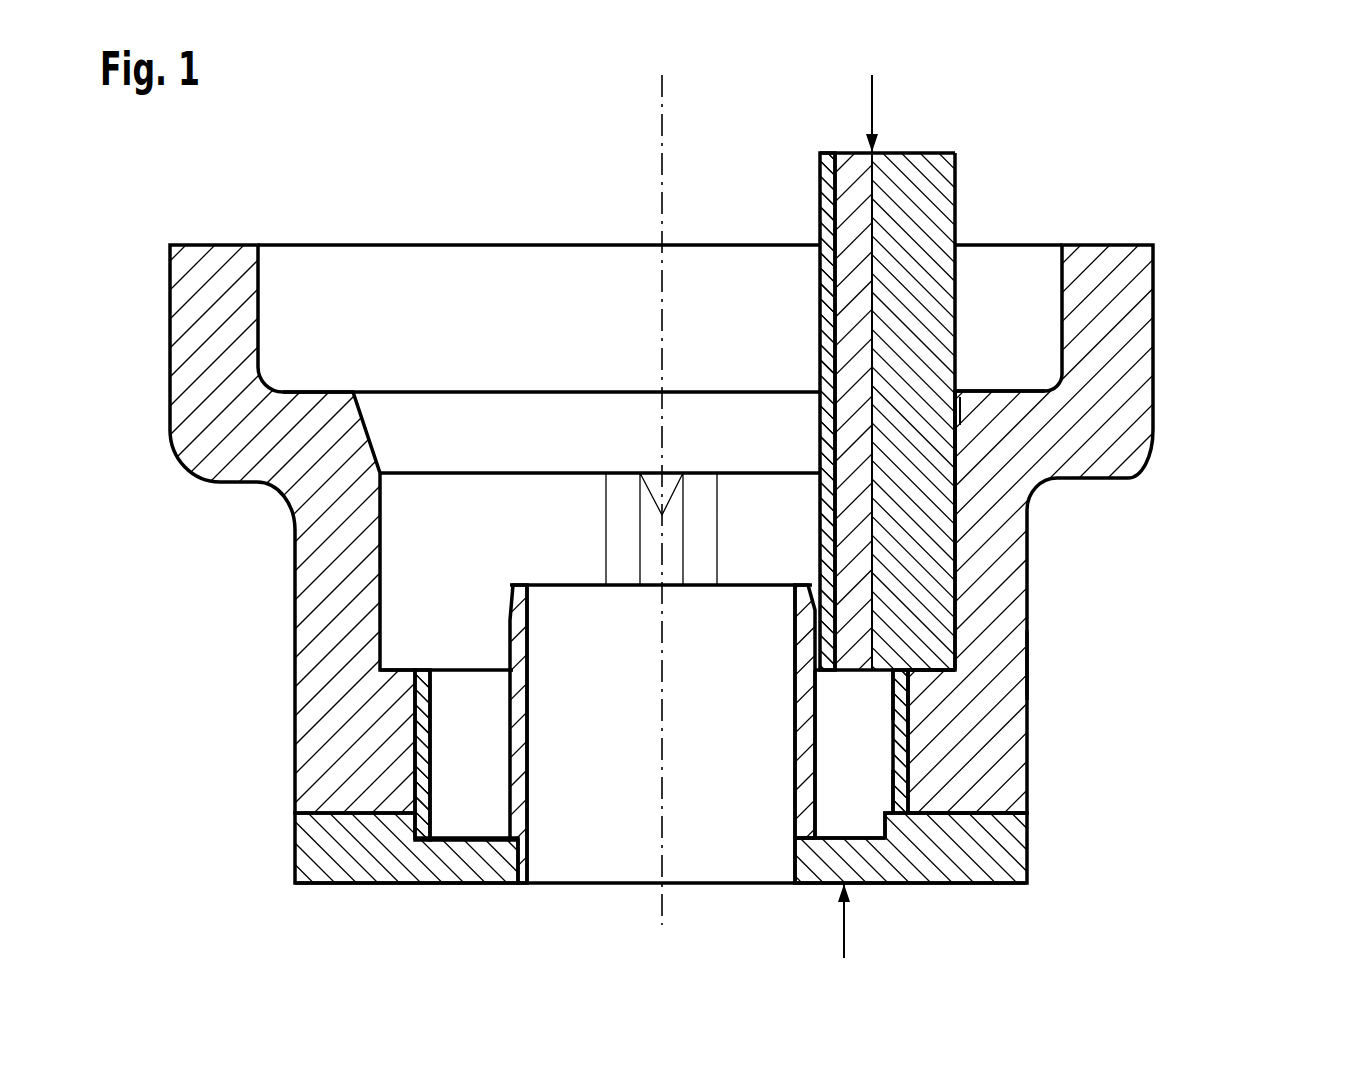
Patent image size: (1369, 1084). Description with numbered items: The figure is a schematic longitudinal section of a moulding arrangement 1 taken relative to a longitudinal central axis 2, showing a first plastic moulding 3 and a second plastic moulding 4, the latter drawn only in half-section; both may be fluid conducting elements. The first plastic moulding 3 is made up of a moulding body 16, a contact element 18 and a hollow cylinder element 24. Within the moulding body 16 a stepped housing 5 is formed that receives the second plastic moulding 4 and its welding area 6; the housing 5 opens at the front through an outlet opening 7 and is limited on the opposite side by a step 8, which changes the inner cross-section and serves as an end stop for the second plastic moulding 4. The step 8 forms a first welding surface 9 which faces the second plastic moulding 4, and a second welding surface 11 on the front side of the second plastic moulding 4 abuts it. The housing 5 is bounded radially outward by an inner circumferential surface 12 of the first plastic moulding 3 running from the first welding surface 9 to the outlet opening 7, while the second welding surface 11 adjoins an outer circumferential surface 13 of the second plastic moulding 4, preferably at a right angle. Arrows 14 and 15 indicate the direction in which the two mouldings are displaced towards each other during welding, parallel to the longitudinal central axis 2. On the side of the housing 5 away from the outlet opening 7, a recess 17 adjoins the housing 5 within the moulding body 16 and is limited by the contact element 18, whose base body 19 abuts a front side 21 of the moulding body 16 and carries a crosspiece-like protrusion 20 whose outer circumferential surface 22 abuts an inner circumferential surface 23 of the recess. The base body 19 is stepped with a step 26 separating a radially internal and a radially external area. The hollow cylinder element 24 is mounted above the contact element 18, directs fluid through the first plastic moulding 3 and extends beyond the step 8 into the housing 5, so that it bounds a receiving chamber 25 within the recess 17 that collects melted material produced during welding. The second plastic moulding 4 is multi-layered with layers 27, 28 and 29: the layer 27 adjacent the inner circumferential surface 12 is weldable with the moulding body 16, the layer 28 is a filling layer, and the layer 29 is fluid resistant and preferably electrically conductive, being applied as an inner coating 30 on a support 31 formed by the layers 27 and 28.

The moulding arrangement 1 is at (1211, 165).
The longitudinal central axis 2 is at (657, 86).
The first plastic moulding 3 is at (1185, 279).
The second plastic moulding 4 is at (937, 142).
The housing 5 is at (962, 400).
The welding area 6 is at (910, 580).
The outlet opening 7 is at (554, 392).
The step 8 is at (948, 670).
The first welding surface 9 is at (924, 667).
The second welding surface 11 is at (945, 688).
The inner circumferential surface 12 is at (950, 483).
The outer circumferential surface 13 is at (972, 464).
The arrow 14 is at (870, 90).
The arrow 15 is at (846, 945).
The moulding body 16 is at (1130, 315).
The recess 17 is at (865, 733).
The contact element 18 is at (1046, 861).
The base body 19 is at (1013, 860).
The protrusion 20 is at (898, 768).
The front side 21 is at (993, 817).
The outer circumferential surface 22 is at (915, 793).
The inner circumferential surface 23 is at (898, 718).
The hollow cylinder element 24 is at (803, 777).
The receiving chamber 25 is at (842, 802).
The step 26 is at (890, 822).
The layer 27 is at (940, 177).
The layer 28 is at (858, 232).
The layer 29 is at (828, 193).
The inner coating 30 is at (786, 497).
The support 31 is at (902, 138).